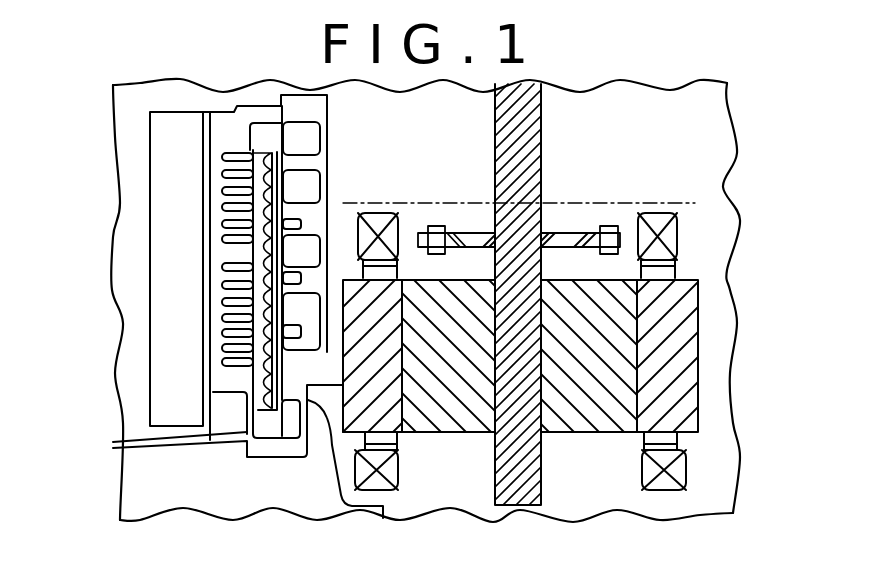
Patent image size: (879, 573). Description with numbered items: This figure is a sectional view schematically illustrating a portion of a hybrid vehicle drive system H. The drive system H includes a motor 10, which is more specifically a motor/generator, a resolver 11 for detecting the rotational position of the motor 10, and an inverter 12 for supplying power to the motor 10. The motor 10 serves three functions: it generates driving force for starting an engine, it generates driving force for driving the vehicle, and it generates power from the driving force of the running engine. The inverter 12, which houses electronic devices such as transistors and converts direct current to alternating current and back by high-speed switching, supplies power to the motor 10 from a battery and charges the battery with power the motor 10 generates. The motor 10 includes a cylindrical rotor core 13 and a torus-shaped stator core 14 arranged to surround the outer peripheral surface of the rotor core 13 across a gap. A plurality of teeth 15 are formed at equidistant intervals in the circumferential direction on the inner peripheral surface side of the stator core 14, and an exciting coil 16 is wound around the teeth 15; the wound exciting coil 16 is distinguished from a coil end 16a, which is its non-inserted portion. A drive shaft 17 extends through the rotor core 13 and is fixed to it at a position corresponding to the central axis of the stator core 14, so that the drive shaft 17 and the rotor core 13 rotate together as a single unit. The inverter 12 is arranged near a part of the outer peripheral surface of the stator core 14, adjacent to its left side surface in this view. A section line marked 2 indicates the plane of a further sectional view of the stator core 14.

The hybrid vehicle drive system H is at (90, 117).
The section line II-II 2 is at (345, 203).
The motor 10 is at (557, 460).
The resolver 11 is at (574, 221).
The inverter 12 is at (163, 252).
The rotor core 13 is at (464, 428).
The stator core 14 is at (690, 353).
The teeth 15 is at (386, 285).
The exciting coil 16 is at (370, 214).
The coil end 16a is at (380, 213).
The drive shaft 17 is at (542, 494).